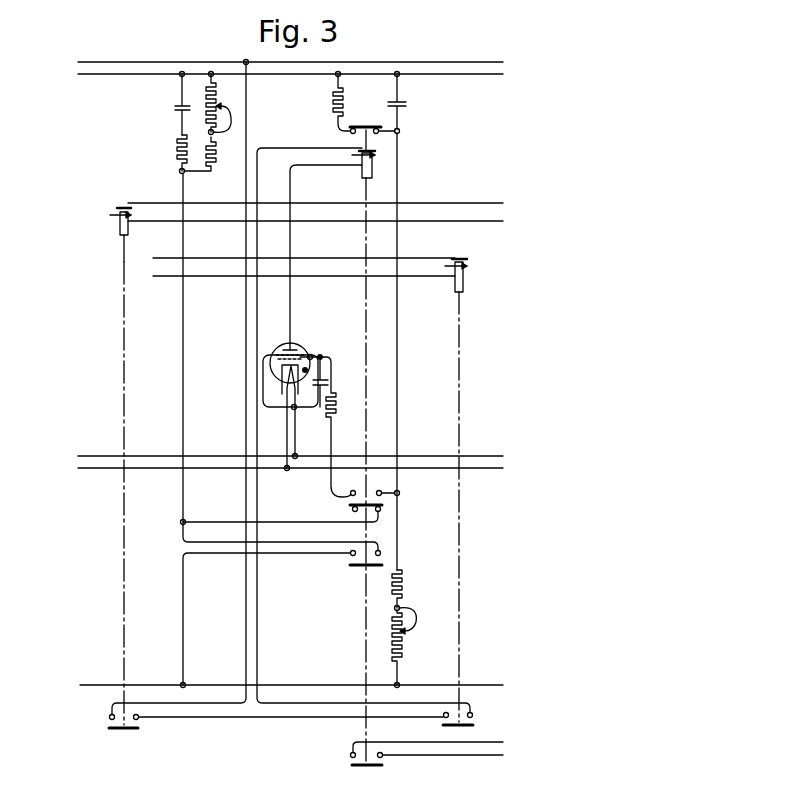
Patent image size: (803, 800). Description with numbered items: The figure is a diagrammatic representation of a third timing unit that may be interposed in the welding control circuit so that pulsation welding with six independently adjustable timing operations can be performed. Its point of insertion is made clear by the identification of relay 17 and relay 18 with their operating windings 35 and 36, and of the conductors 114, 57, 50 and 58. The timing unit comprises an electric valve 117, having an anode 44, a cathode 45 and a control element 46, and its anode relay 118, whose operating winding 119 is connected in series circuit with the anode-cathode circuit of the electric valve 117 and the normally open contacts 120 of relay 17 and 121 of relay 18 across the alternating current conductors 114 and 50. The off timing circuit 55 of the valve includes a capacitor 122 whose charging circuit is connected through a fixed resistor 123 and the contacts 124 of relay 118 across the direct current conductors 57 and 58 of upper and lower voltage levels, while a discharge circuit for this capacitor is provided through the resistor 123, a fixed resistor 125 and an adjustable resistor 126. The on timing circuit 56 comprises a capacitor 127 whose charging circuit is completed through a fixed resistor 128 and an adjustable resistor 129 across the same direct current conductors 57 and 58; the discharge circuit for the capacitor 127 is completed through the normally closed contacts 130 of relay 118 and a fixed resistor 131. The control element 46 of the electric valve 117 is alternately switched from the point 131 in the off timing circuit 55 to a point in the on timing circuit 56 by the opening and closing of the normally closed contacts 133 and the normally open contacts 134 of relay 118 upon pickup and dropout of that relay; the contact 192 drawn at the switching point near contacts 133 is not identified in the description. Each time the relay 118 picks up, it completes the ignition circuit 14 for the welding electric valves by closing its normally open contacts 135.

The alternating current conductor 114 is at (183, 62).
The direct current conductor of upper voltage level 57 is at (120, 77).
The operating winding of relay 18 36 is at (117, 210).
The operating winding of relay 17 35 is at (470, 262).
The alternating current conductor 50 is at (105, 455).
The direct current conductor of lower voltage level 58 is at (97, 688).
The capacitor 122 is at (174, 106).
The fixed resistor 123 is at (177, 146).
The adjustable resistor 126 is at (217, 104).
The fixed resistor 125 is at (217, 153).
The off timing circuit 55 is at (185, 357).
The fixed resistor 131 is at (335, 100).
The normally closed contacts of relay 118 130 is at (350, 131).
The capacitor 127 is at (406, 104).
The operating winding of relay 118 119 is at (373, 165).
The anode relay 118 is at (367, 312).
The on timing circuit 56 is at (399, 388).
The relay 18 is at (125, 308).
The relay 17 is at (460, 324).
The anode 44 is at (283, 347).
The electric valve 117 is at (300, 348).
The cathode 45 is at (290, 411).
The control element 46 is at (313, 357).
The normally open contacts of relay 118 134 is at (352, 490).
The normally closed contacts of relay 118 133 is at (349, 508).
The switch contact 192 is at (400, 495).
The contacts of relay 118 124 is at (352, 557).
The fixed resistor 128 is at (404, 581).
The adjustable resistor 129 is at (405, 640).
The normally open contacts of relay 18 121 is at (108, 718).
The normally open contacts of relay 17 120 is at (443, 718).
The normally open contacts of relay 118 135 is at (350, 756).
The ignition circuit 14 is at (488, 755).